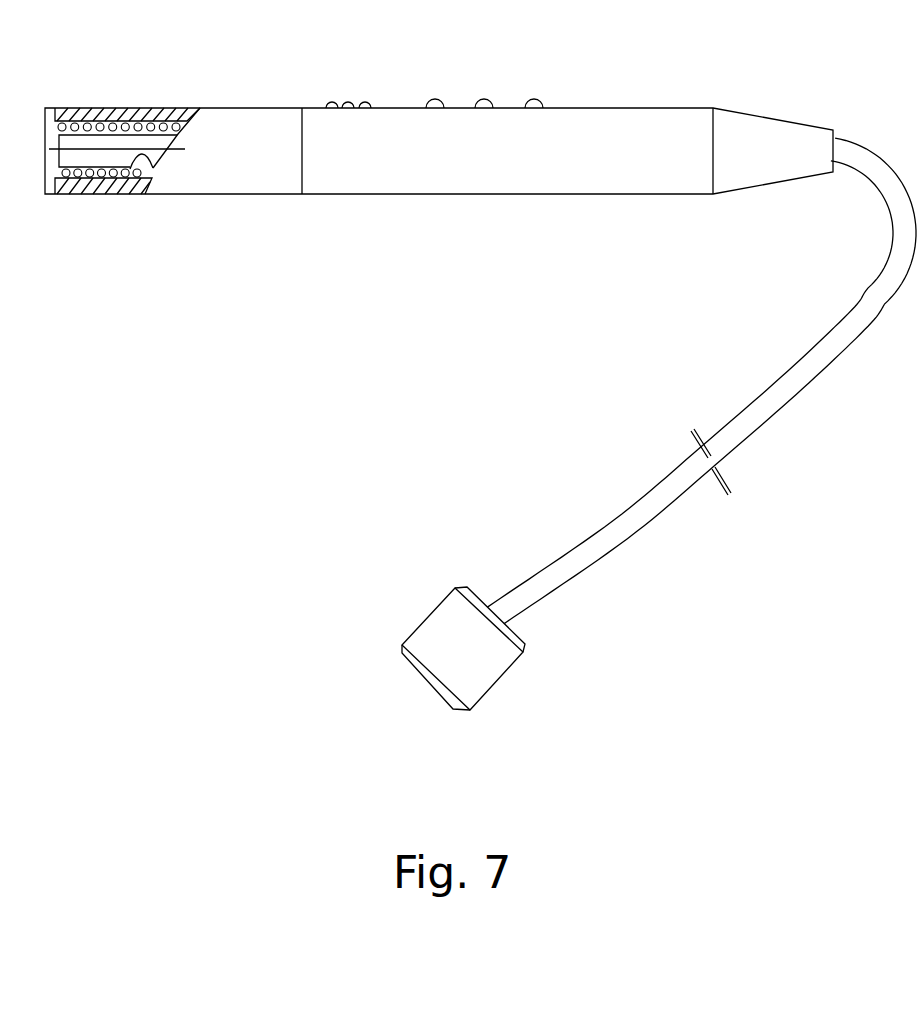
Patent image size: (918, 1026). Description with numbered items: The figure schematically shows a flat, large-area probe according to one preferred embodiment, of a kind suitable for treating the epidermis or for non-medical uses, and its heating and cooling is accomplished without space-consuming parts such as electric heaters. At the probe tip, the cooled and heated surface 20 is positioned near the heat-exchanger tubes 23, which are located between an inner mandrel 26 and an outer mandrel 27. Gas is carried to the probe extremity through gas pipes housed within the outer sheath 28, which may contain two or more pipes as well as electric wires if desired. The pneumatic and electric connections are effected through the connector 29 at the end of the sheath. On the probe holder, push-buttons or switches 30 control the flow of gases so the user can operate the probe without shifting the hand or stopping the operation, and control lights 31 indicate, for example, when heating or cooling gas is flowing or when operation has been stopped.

The cooled and heated surface 20 is at (39, 143).
The outer mandrel 27 is at (148, 117).
The heat-exchanger tubes 23 is at (108, 180).
The inner mandrel 26 is at (153, 168).
The control lights 31 is at (365, 102).
The push-buttons or switches 30 is at (534, 99).
The outer sheath 28 is at (807, 389).
The connector 29 is at (483, 693).